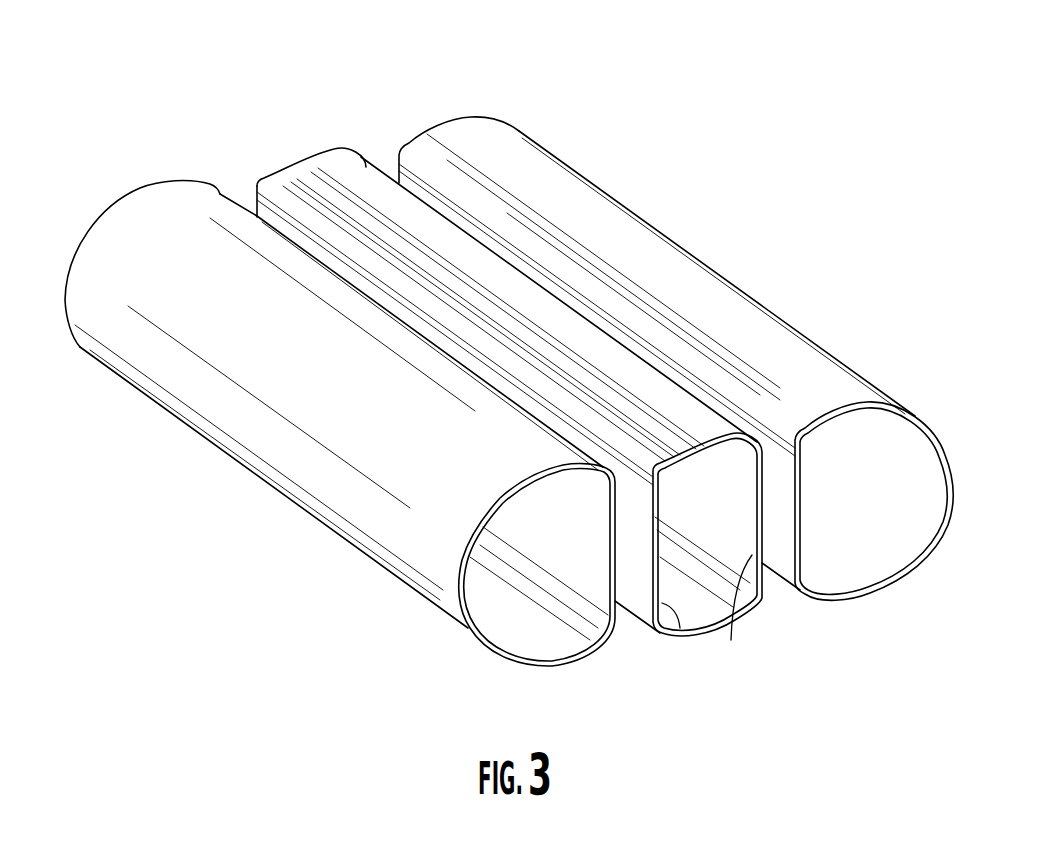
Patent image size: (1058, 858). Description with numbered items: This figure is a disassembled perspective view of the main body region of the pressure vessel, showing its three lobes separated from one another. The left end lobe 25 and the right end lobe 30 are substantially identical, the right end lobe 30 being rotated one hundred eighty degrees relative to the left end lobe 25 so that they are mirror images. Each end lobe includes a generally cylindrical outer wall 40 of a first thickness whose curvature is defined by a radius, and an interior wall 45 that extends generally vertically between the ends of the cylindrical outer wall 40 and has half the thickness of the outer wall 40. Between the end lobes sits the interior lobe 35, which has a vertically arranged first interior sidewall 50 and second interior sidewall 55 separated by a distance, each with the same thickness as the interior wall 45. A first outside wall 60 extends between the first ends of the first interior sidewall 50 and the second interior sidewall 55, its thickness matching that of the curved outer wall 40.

The left end lobe 25 is at (119, 421).
The right end lobe 30 is at (782, 283).
The interior lobe 35 is at (337, 124).
The cylindrical outer wall 40 is at (635, 237).
The interior wall 45 is at (622, 618).
The first interior sidewall 50 is at (680, 628).
The second interior sidewall 55 is at (731, 640).
The first outside wall 60 is at (322, 170).